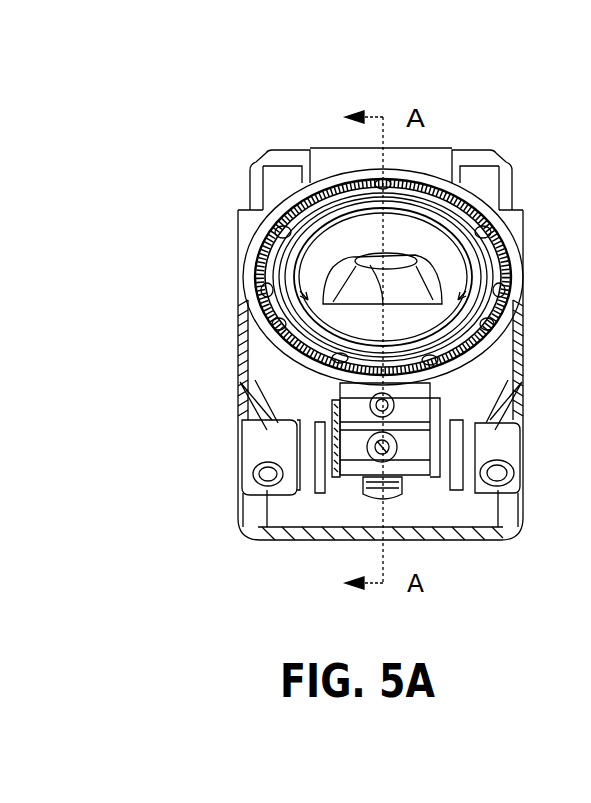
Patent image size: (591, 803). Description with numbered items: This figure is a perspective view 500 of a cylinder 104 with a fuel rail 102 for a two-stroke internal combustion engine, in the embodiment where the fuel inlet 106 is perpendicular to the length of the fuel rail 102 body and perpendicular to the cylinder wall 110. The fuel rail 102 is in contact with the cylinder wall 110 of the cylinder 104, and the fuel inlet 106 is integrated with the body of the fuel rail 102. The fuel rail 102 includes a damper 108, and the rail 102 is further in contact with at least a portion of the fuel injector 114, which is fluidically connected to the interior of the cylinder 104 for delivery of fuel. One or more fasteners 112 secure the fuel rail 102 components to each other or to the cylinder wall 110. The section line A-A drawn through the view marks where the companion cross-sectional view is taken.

The perspective view 500 is at (221, 116).
The cylinder 104 is at (208, 312).
The cylinder wall 110 is at (473, 393).
The fasteners 112 is at (387, 400).
The damper 108 is at (323, 448).
The fuel inlet 106 is at (388, 458).
The fuel rail 102 is at (341, 483).
The fuel injector 114 is at (393, 490).